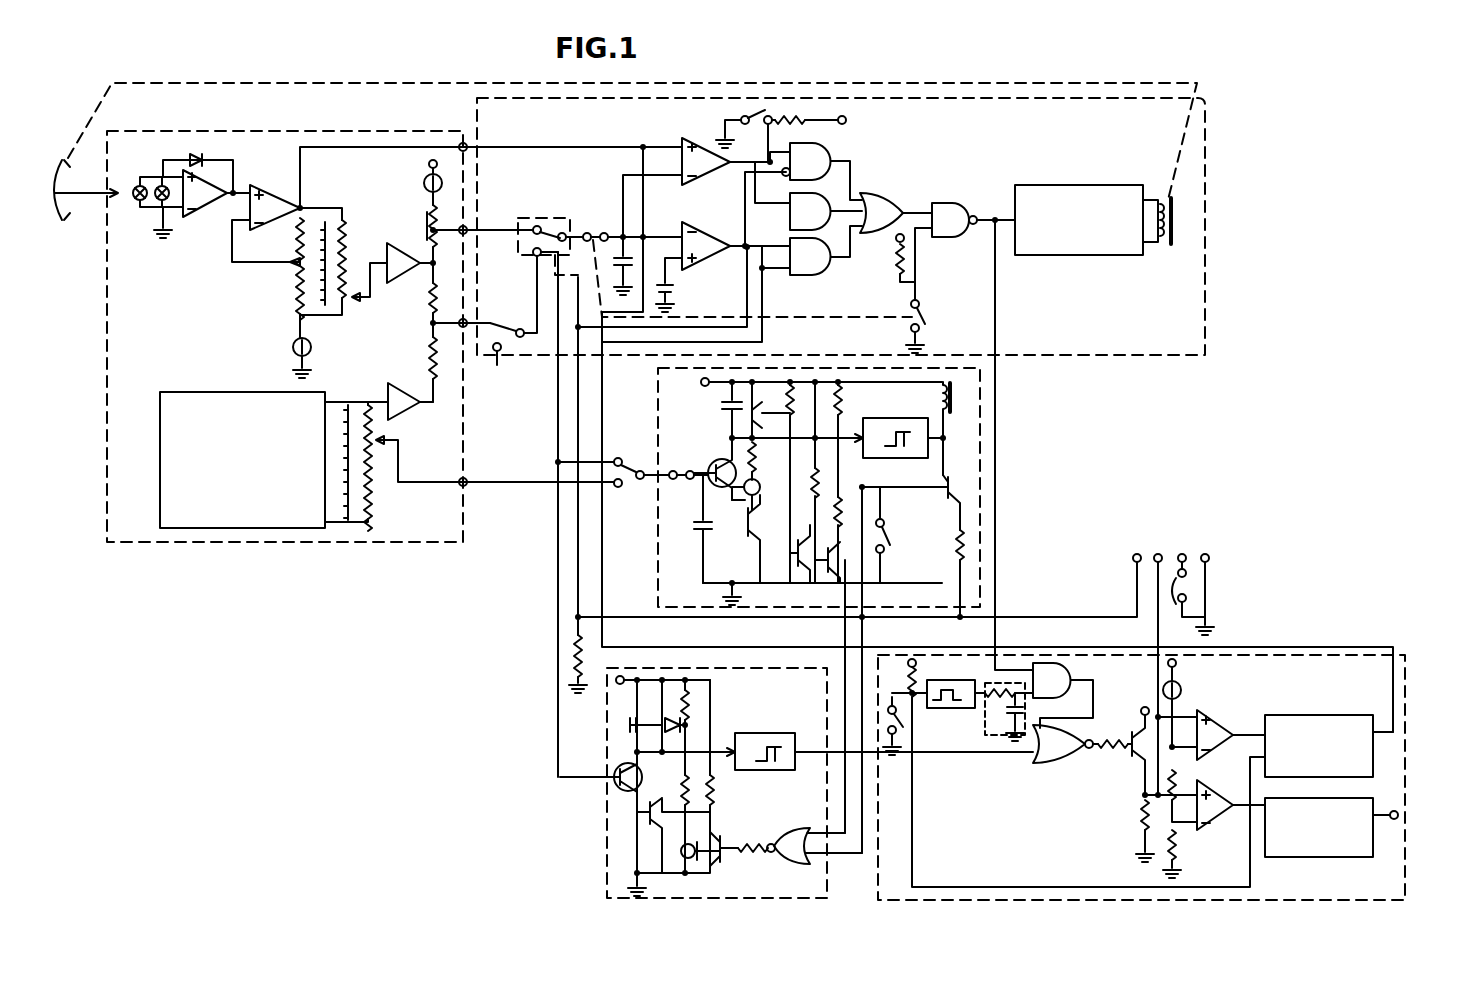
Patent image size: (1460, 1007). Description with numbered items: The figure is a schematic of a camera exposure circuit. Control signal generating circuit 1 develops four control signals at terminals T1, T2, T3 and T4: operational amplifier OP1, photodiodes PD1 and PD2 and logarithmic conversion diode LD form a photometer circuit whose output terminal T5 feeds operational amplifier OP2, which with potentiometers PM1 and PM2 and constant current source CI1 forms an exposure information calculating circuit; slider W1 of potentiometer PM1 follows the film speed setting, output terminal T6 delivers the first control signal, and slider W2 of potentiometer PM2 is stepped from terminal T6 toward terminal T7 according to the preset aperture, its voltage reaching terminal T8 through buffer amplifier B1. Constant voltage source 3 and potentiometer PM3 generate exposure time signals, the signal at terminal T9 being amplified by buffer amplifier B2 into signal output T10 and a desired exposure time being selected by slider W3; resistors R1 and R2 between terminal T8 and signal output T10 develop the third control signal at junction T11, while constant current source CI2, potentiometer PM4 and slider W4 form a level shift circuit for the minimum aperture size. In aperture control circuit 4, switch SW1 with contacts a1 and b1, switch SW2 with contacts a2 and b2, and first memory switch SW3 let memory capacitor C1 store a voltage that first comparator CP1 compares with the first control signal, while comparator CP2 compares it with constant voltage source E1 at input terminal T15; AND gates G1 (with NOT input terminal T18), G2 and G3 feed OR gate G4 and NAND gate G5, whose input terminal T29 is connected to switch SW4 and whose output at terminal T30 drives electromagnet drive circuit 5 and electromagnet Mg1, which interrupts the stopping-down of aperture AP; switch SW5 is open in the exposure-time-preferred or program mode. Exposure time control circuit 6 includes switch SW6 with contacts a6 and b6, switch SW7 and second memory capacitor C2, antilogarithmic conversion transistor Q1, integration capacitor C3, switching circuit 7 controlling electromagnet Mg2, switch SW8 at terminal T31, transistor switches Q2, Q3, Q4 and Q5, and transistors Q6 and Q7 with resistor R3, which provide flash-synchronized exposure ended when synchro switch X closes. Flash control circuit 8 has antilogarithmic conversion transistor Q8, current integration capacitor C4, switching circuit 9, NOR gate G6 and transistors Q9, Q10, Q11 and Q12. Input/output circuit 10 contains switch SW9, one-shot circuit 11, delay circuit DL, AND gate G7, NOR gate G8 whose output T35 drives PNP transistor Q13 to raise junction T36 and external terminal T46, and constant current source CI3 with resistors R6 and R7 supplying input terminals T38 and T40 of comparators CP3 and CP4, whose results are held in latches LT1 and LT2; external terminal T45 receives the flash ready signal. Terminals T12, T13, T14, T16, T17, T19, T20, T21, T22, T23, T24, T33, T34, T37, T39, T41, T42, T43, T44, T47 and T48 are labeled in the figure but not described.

The control signal generating circuit 1 is at (276, 548).
The constant voltage source 3 is at (215, 392).
The aperture control circuit 4 is at (1098, 360).
The electromagnet drive circuit 5 is at (1060, 185).
The exposure time control circuit 6 is at (988, 470).
The switching circuit 7 is at (880, 418).
The flash control circuit 8 is at (778, 900).
The switching circuit 9 is at (755, 740).
The input/output circuit 10 is at (993, 900).
The one-shot circuit 11 is at (962, 666).
The aperture AP is at (78, 213).
The photodiode PD1 is at (140, 205).
The photodiode PD2 is at (165, 205).
The logarithmic conversion diode LD is at (195, 155).
The operational amplifier OP1 is at (200, 215).
The operational amplifier OP2 is at (290, 205).
The potentiometer PM1 is at (298, 290).
The potentiometer PM2 is at (352, 215).
The potentiometer PM3 is at (372, 485).
The potentiometer PM4 is at (440, 205).
The slider W1 is at (295, 263).
The slider W2 is at (355, 300).
The slider W3 is at (384, 440).
The slider W4 is at (445, 252).
The buffer amplifier B1 is at (388, 258).
The buffer amplifier B2 is at (412, 386).
The constant current source CI1 is at (292, 350).
The constant current source CI2 is at (422, 180).
The constant current source CI3 is at (1199, 703).
The resistor R1 is at (450, 310).
The resistor R2 is at (450, 366).
The resistor R3 is at (767, 461).
The resistor R6 is at (1187, 794).
The resistor R7 is at (1140, 845).
The memory capacitor C1 is at (615, 264).
The second memory capacitor C2 is at (696, 520).
The integration capacitor C3 is at (719, 410).
The current integration capacitor C4 is at (630, 722).
The first comparator CP1 is at (697, 178).
The comparator CP2 is at (720, 270).
The comparator CP3 is at (1240, 715).
The comparator CP4 is at (1222, 835).
The constant voltage source E1 is at (692, 303).
The AND gate G1 is at (822, 171).
The AND gate G2 is at (826, 211).
The AND gate G3 is at (826, 250).
The OR gate G4 is at (896, 213).
The NAND gate G5 is at (965, 251).
The NOR gate G6 is at (800, 846).
The AND gate G7 is at (1063, 695).
The NOR gate G8 is at (1082, 744).
The switch SW1 is at (556, 225).
The second switch SW2 is at (527, 350).
The first memory switch SW3 is at (588, 232).
The switch SW4 is at (944, 322).
The switch SW5 is at (752, 110).
The switch SW6 is at (628, 490).
The switch SW7 is at (676, 470).
The switch SW8 is at (906, 535).
The switch SW9 is at (920, 722).
The contact a1 is at (530, 208).
The contact b1 is at (533, 250).
The contact a2 is at (514, 312).
The contact b2 is at (511, 363).
The contact a6 is at (591, 447).
The contact b6 is at (611, 495).
The electromagnet Mg1 is at (1168, 240).
The electromagnet Mg2 is at (969, 428).
The antilogarithmic conversion transistor Q1 is at (708, 482).
The transistor switch Q2 is at (826, 558).
The transistor switch Q3 is at (791, 554).
The transistor switch Q4 is at (765, 410).
The transistor Q5 is at (742, 528).
The transistor Q6 is at (758, 493).
The transistor Q7 is at (946, 485).
The antilogarithmic conversion transistor Q8 is at (614, 780).
The switching transistor Q9 is at (722, 852).
The switching transistor Q10 is at (685, 854).
The switching transistor Q11 is at (665, 726).
The transistor Q12 is at (659, 835).
The PNP transistor Q13 is at (1134, 760).
The delay circuit DL is at (1004, 719).
The latch LT1 is at (1342, 715).
The latch LT2 is at (1282, 858).
The synchro switch X is at (1171, 632).
The terminal T1 is at (468, 143).
The terminal T2 is at (468, 227).
The terminal T3 is at (468, 320).
The terminal T4 is at (466, 479).
The output terminal T5 is at (233, 190).
The output terminal T6 is at (302, 205).
The terminal T7 is at (308, 330).
The terminal T8 is at (418, 266).
The terminal T9 is at (370, 398).
The signal output T10 is at (421, 404).
The junction T11 is at (430, 324).
The terminal T12 is at (645, 145).
The terminal T13 is at (663, 165).
The terminal T14 is at (666, 221).
The input terminal T15 is at (666, 243).
The terminal T16 is at (800, 124).
The terminal T17 is at (763, 143).
The input terminal T18 is at (760, 161).
The terminal T19 is at (755, 195).
The terminal T20 is at (750, 210).
The terminal T21 is at (770, 225).
The terminal T22 is at (760, 258).
The terminal T23 is at (747, 280).
The terminal T24 is at (764, 278).
The input terminal T29 is at (915, 280).
The input terminal T30 is at (995, 215).
The terminal T31 is at (864, 484).
The terminal T33 is at (1000, 760).
The terminal T34 is at (1093, 690).
The output T35 is at (1085, 755).
The junction T36 is at (1142, 797).
The terminal T37 is at (1193, 717).
The input terminal T38 is at (1203, 750).
The terminal T39 is at (1200, 790).
The input terminal T40 is at (1175, 835).
The terminal T41 is at (1245, 732).
The terminal T42 is at (1208, 825).
The terminal T43 is at (1395, 745).
The terminal T44 is at (1392, 835).
The external terminal T45 is at (1136, 553).
The external terminal T46 is at (1158, 553).
The terminal T47 is at (1185, 540).
The terminal T48 is at (1207, 553).